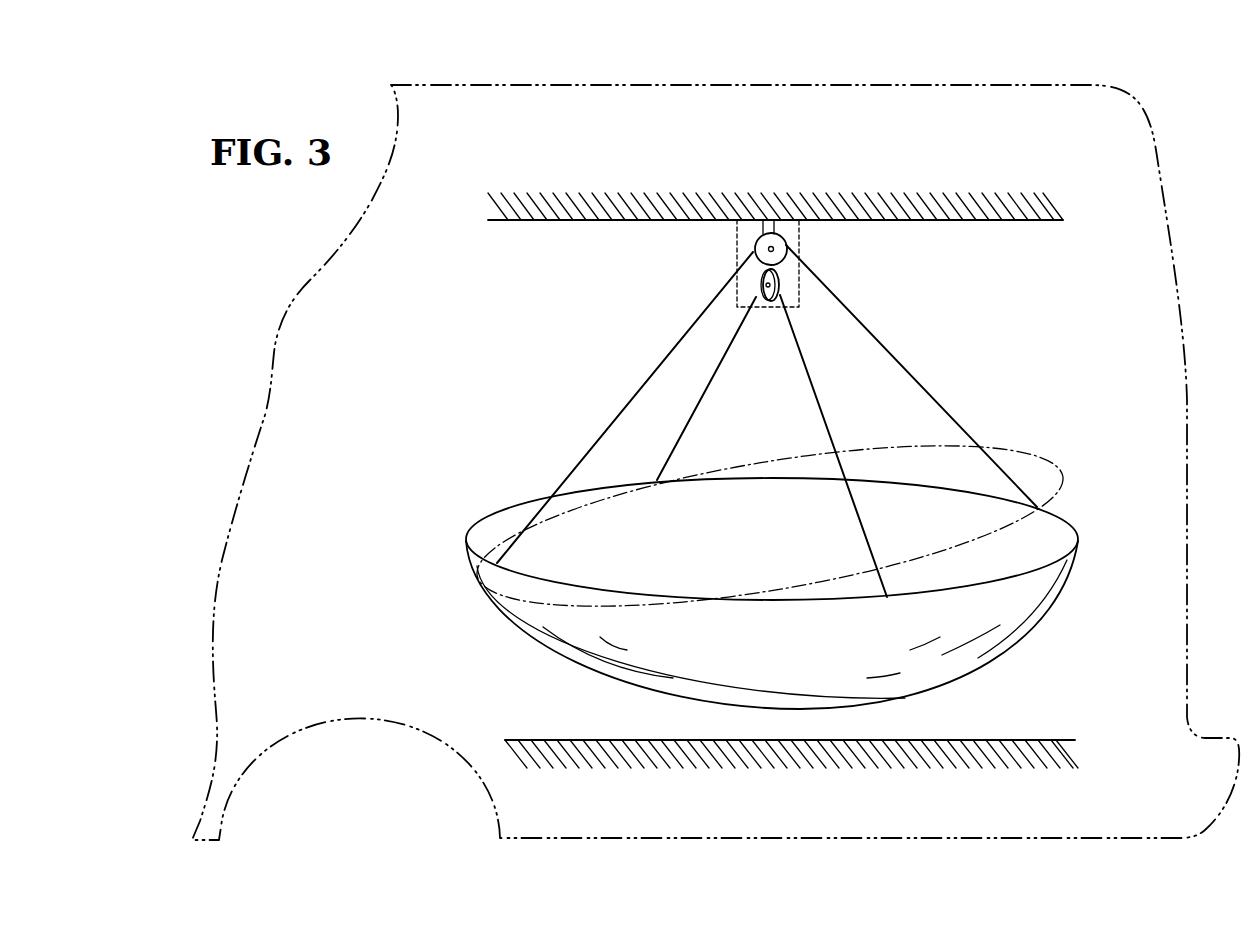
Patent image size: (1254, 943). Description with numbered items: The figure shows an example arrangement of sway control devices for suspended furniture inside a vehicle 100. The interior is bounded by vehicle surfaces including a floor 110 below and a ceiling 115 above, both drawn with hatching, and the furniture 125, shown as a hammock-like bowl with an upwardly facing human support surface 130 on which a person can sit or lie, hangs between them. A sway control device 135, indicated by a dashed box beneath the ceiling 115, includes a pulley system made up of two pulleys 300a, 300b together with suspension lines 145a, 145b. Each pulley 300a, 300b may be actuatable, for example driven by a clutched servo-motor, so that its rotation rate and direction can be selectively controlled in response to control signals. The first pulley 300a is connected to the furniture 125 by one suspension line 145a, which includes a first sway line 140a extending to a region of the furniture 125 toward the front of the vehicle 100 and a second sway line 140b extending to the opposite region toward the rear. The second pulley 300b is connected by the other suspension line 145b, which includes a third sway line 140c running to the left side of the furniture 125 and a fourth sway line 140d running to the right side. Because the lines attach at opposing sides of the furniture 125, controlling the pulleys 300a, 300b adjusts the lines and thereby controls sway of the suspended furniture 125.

The vehicle 100 is at (1040, 85).
The floor 110 is at (1005, 740).
The ceiling 115 is at (993, 221).
The furniture 125 is at (517, 622).
The human support surface 130 is at (782, 583).
The sway control device 135 is at (799, 240).
The first sway line 140a is at (690, 412).
The second sway line 140b is at (823, 417).
The third sway line 140c is at (619, 415).
The fourth sway line 140d is at (933, 395).
The suspension line 145a is at (808, 446).
The suspension line 145b is at (753, 404).
The first pulley 300a is at (763, 272).
The second pulley 300b is at (757, 237).